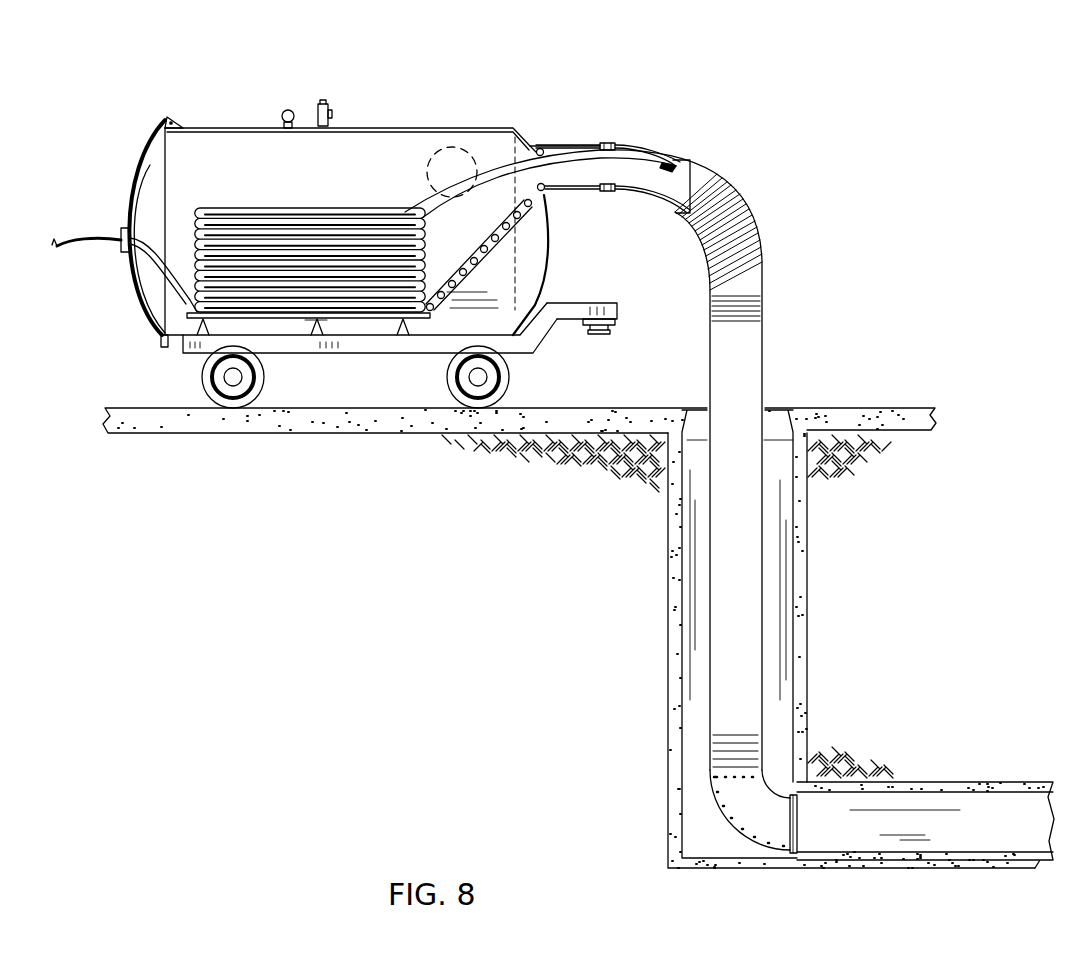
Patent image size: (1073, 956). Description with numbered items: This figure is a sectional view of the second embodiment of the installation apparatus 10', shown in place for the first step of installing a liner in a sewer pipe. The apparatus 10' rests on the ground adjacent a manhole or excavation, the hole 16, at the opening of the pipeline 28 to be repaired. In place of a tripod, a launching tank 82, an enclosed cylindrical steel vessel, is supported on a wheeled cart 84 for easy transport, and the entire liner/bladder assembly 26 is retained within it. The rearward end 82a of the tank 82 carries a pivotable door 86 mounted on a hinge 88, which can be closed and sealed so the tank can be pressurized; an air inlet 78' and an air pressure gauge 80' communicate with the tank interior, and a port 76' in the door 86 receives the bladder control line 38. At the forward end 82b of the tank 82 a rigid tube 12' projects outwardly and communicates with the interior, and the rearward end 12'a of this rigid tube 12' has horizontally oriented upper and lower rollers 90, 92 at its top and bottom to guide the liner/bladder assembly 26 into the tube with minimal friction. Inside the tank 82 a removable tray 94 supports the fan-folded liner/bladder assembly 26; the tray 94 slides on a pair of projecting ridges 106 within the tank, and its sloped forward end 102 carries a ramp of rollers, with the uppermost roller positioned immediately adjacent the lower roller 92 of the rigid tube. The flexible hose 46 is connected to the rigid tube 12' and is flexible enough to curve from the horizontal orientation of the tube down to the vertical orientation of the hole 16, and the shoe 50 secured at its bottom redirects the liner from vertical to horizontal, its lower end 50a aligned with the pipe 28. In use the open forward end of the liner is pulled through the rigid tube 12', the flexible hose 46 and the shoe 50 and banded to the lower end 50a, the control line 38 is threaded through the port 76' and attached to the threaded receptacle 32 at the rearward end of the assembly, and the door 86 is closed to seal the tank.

The installation apparatus 10' is at (386, 212).
The rigid tube 12' is at (613, 145).
The rearward end of rigid tube 12'a is at (552, 107).
The hole 16 is at (777, 593).
The liner/bladder assembly 26 is at (368, 183).
The pipeline 28 is at (973, 808).
The threaded receptacle 32 is at (190, 232).
The bladder control line 38 is at (90, 240).
The flexible hose 46 is at (765, 350).
The shoe 50 is at (757, 793).
The lower end of shoe 50a is at (770, 822).
The port 76' is at (141, 237).
The air inlet 78' is at (342, 83).
The air pressure gauge 80' is at (288, 84).
The launching tank 82 is at (447, 130).
The rearward end of tank 82a is at (193, 125).
The forward end of tank 82b is at (555, 248).
The wheeled cart 84 is at (588, 305).
The pivotable door 86 is at (147, 165).
The hinge 88 is at (167, 118).
The upper roller 90 is at (553, 148).
The lower roller 92 is at (556, 195).
The tray 94 is at (316, 320).
The sloped forward end 102 is at (470, 275).
The projecting ridges 106 is at (203, 330).